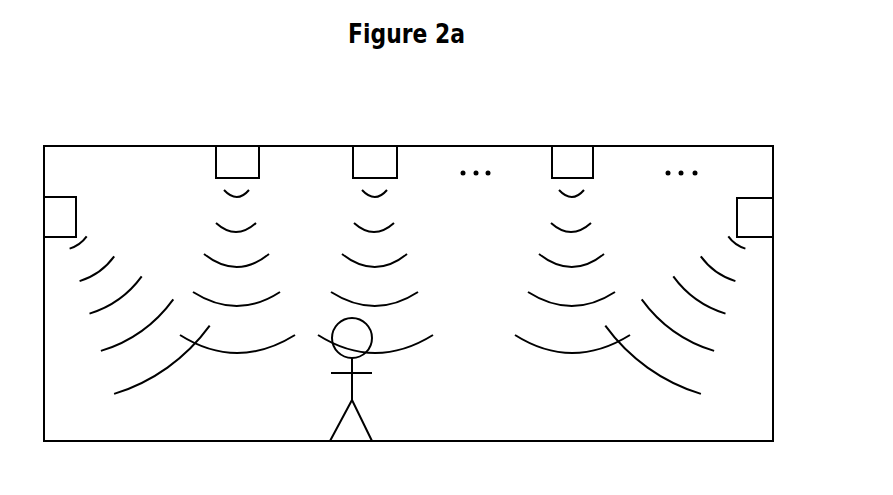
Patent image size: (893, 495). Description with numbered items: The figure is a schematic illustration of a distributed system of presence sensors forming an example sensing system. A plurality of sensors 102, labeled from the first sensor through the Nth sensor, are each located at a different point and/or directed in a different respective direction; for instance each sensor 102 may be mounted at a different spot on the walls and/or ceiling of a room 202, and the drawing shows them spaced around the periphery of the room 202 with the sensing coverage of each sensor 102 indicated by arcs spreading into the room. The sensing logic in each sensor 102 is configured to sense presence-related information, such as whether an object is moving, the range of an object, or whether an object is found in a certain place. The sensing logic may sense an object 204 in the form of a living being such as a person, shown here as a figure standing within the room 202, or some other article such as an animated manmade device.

The sensor 102 is at (76, 208).
The room 202 is at (650, 145).
The object 204 is at (372, 337).